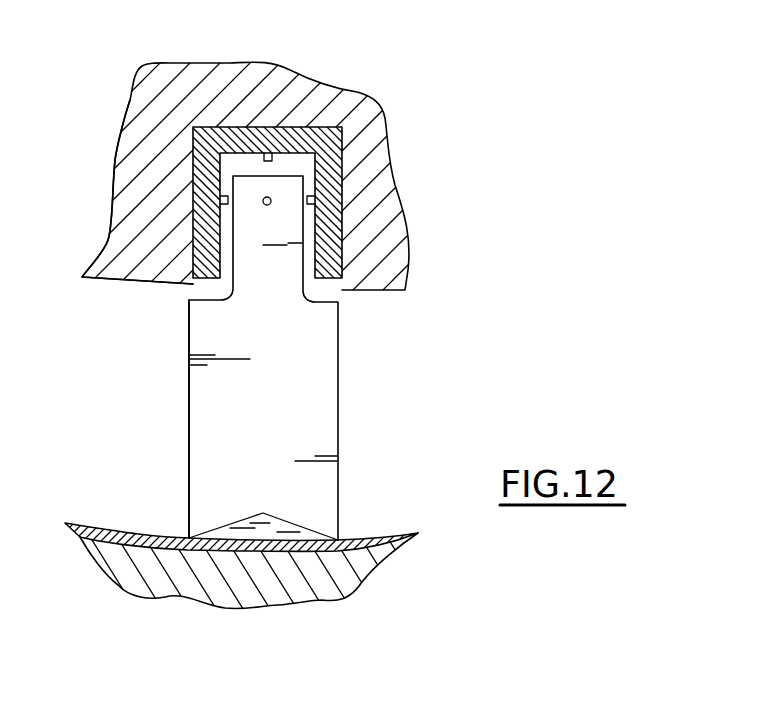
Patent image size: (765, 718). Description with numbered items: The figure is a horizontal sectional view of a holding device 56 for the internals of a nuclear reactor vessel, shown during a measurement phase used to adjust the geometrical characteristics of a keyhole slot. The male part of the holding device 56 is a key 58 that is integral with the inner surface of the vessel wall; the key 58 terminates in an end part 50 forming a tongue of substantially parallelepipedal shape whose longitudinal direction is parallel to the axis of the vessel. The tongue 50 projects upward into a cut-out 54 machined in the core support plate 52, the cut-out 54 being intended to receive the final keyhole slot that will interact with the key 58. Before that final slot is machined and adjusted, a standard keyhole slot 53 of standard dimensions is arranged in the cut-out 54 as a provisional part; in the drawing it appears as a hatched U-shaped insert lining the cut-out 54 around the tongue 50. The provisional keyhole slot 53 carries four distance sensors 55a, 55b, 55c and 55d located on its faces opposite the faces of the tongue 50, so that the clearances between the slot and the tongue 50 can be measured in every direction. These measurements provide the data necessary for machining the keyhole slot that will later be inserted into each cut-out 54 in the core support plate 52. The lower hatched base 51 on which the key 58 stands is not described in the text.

The end part forming a tongue 50 is at (283, 277).
The base substrate 51 is at (367, 560).
The core support plate 52 is at (127, 267).
The standard keyhole slot 53 is at (337, 180).
The cut-out 54 is at (343, 135).
The distance sensor 55a is at (268, 152).
The distance sensor 55b is at (221, 199).
The distance sensor 55c is at (314, 201).
The distance sensor 55d is at (268, 196).
The holding device 56 is at (352, 375).
The key 58 is at (207, 418).